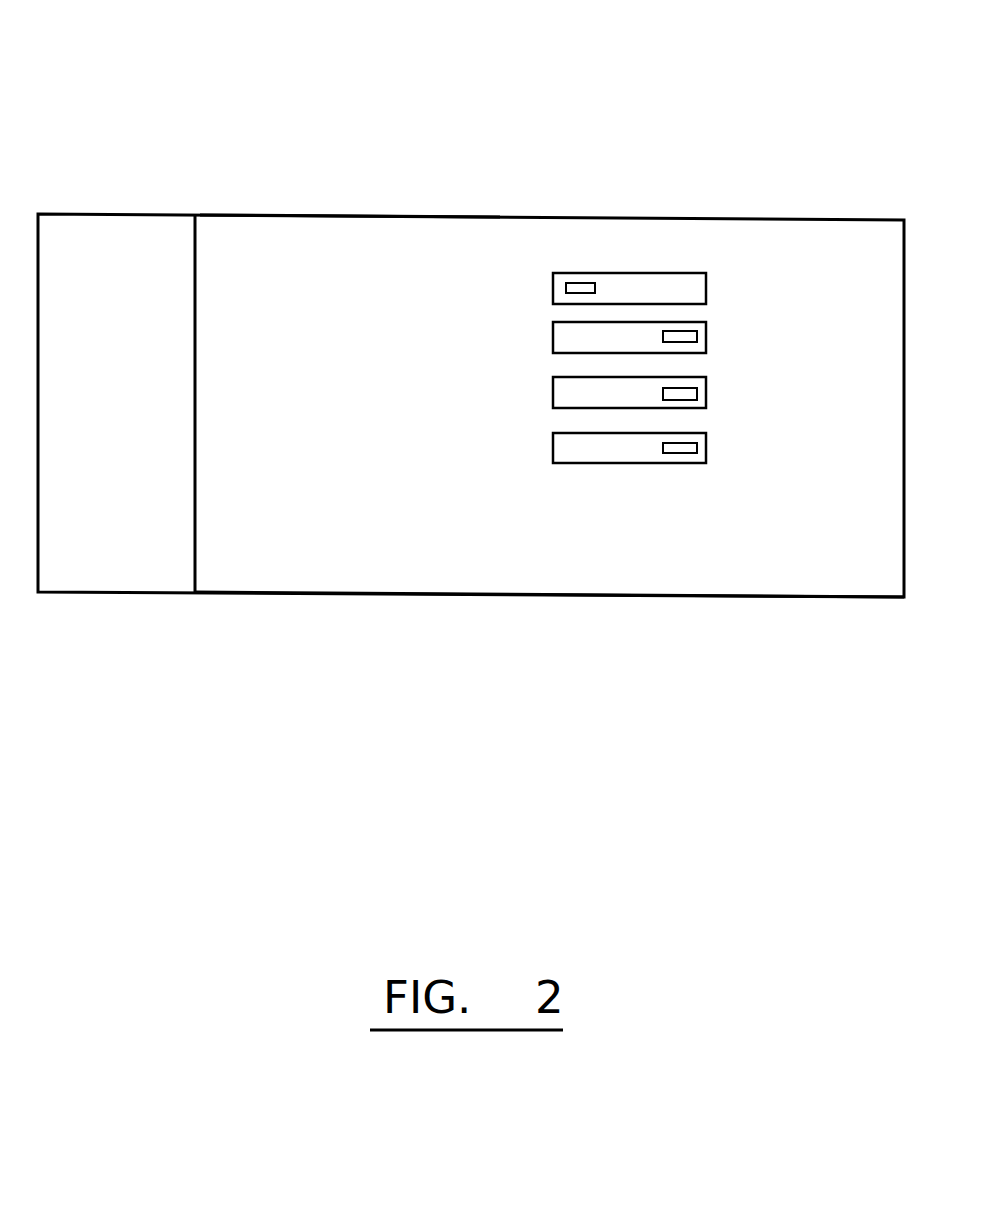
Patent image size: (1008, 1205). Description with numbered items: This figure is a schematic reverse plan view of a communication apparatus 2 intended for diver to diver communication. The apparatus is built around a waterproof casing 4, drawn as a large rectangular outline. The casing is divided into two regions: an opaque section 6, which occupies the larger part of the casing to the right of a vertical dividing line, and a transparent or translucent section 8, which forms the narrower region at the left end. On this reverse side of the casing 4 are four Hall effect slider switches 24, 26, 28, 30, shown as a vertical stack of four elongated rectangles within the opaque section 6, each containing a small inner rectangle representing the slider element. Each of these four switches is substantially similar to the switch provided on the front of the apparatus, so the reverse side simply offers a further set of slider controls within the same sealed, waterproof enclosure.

The communication apparatus 2 is at (636, 190).
The waterproof casing 4 is at (281, 214).
The opaque section 6 is at (630, 558).
The transparent or translucent section 8 is at (113, 552).
The Hall effect slider switch 24 is at (567, 287).
The Hall effect slider switch 26 is at (692, 338).
The Hall effect slider switch 28 is at (692, 394).
The Hall effect slider switch 30 is at (690, 449).